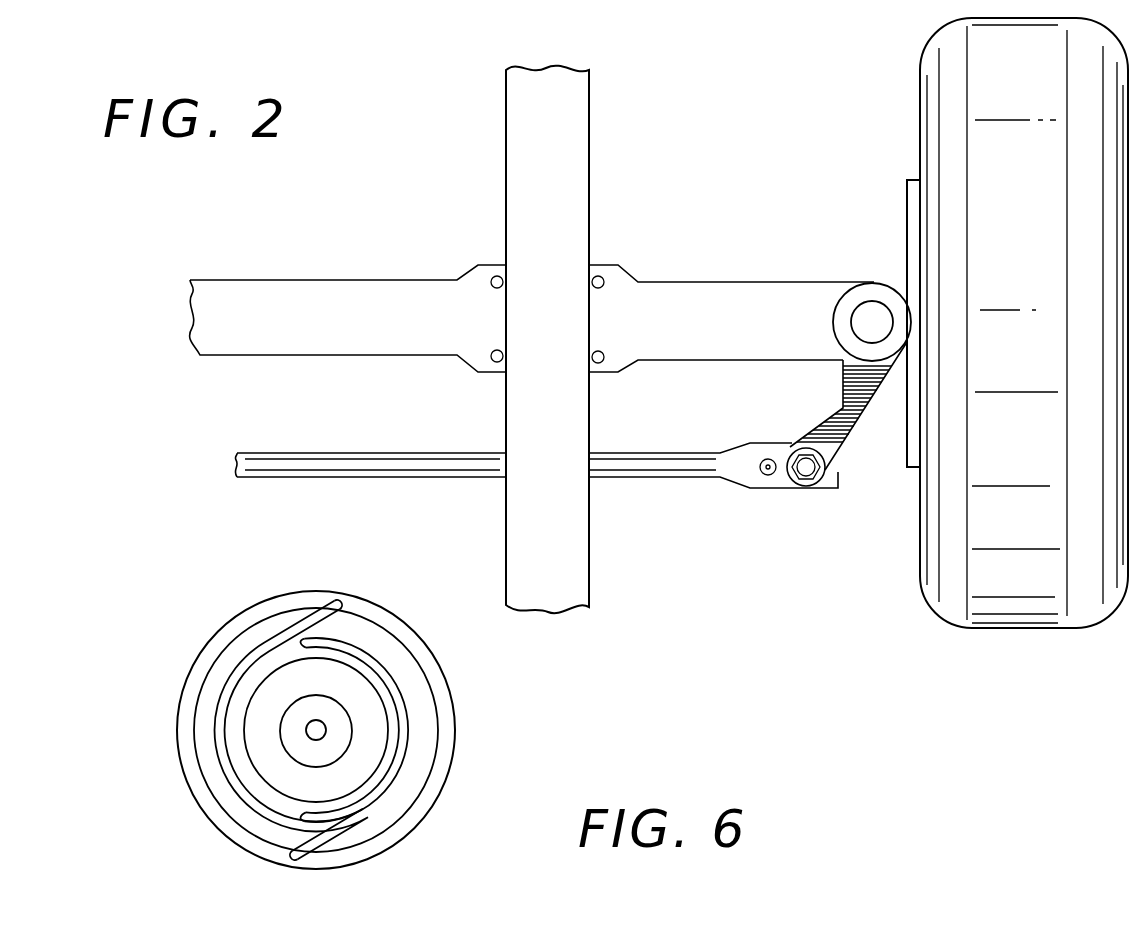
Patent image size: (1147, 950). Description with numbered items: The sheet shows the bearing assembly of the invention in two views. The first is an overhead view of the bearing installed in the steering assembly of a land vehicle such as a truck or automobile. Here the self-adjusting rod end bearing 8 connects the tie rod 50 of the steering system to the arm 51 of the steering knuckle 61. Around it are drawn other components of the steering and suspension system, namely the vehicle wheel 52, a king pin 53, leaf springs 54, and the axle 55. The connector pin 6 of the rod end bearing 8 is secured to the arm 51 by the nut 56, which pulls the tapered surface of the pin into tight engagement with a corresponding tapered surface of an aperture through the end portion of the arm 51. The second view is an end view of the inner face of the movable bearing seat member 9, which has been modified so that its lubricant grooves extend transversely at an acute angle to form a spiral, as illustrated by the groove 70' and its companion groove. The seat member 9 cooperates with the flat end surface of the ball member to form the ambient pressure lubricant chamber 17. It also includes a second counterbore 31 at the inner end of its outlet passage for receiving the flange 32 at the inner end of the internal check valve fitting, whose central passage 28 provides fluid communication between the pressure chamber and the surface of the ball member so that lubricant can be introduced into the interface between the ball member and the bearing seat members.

In FIG. 2, the leaf springs 54 is at (525, 67).
In FIG. 2, the vehicle wheel 52 is at (935, 118).
In FIG. 2, the axle 55 is at (330, 280).
In FIG. 2, the king pin 53 is at (852, 318).
In FIG. 2, the steering knuckle 61 is at (868, 283).
In FIG. 2, the arm 51 is at (860, 460).
In FIG. 2, the tie rod 50 is at (400, 462).
In FIG. 2, the self-adjusting rod end bearing 8 is at (743, 489).
In FIG. 2, the nut 56 is at (796, 452).
In FIG. 2, the connector pin 6 is at (810, 478).
In FIG. 6, the movable bearing seat member 9 is at (452, 693).
In FIG. 6, the ambient pressure lubricant chamber 17 is at (260, 760).
In FIG. 6, the central passage 28 is at (320, 737).
In FIG. 6, the flange 32 is at (258, 803).
In FIG. 6, the groove 70' is at (410, 733).
In FIG. 6, the second counterbore 31 is at (330, 770).